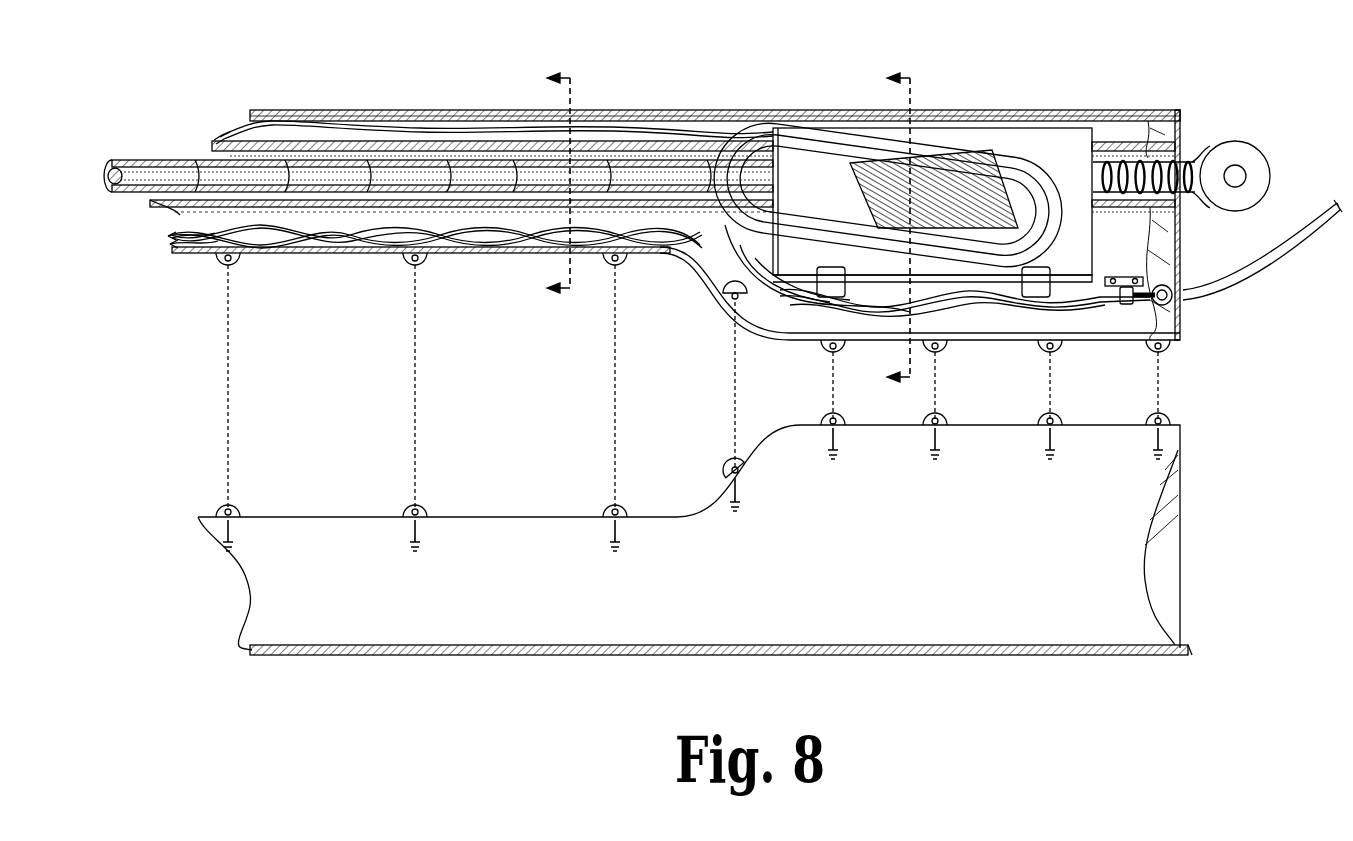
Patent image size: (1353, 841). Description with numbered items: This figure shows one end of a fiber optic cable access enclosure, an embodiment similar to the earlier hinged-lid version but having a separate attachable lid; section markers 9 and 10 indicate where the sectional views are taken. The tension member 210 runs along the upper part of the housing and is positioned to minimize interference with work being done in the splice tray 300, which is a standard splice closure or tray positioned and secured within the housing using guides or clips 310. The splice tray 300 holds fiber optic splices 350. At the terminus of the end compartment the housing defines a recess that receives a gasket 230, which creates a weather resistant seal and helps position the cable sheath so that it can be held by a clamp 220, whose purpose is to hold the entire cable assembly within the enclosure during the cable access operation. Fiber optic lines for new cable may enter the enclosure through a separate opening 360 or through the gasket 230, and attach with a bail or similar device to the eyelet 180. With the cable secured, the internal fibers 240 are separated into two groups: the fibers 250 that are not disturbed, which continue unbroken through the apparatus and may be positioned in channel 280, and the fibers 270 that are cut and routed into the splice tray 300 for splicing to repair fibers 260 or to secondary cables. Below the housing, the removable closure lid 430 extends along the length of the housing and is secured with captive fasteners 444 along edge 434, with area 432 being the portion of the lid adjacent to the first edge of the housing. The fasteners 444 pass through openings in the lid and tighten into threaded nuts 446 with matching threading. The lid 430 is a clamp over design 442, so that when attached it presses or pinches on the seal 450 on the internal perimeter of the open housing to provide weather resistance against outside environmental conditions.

The eyelet 180 is at (1257, 158).
The tension member 210 is at (125, 160).
The clamp 220 is at (1120, 302).
The gasket 230 is at (1183, 322).
The internal fibers 240 is at (987, 307).
The fibers that would not be disturbed 250 is at (457, 243).
The repair fibers 260 is at (722, 135).
The fibers to be accessed and/or repaired 270 is at (747, 153).
The channel 280 is at (217, 243).
The splice tray 300 is at (1062, 137).
The guides or clips 310 is at (833, 270).
The fiber optic splices 350 is at (873, 195).
The separate opening 360 is at (748, 307).
The closure lid 430 is at (715, 500).
The area of closure lid adjacent first edge 432 is at (1122, 693).
The edge 434 is at (1200, 448).
The clamp over design 442 is at (1187, 650).
The captive fasteners 444 is at (235, 545).
The threaded nuts 446 is at (403, 262).
The seal 450 is at (272, 118).
The section line 9 is at (890, 229).
The section line 10 is at (547, 186).